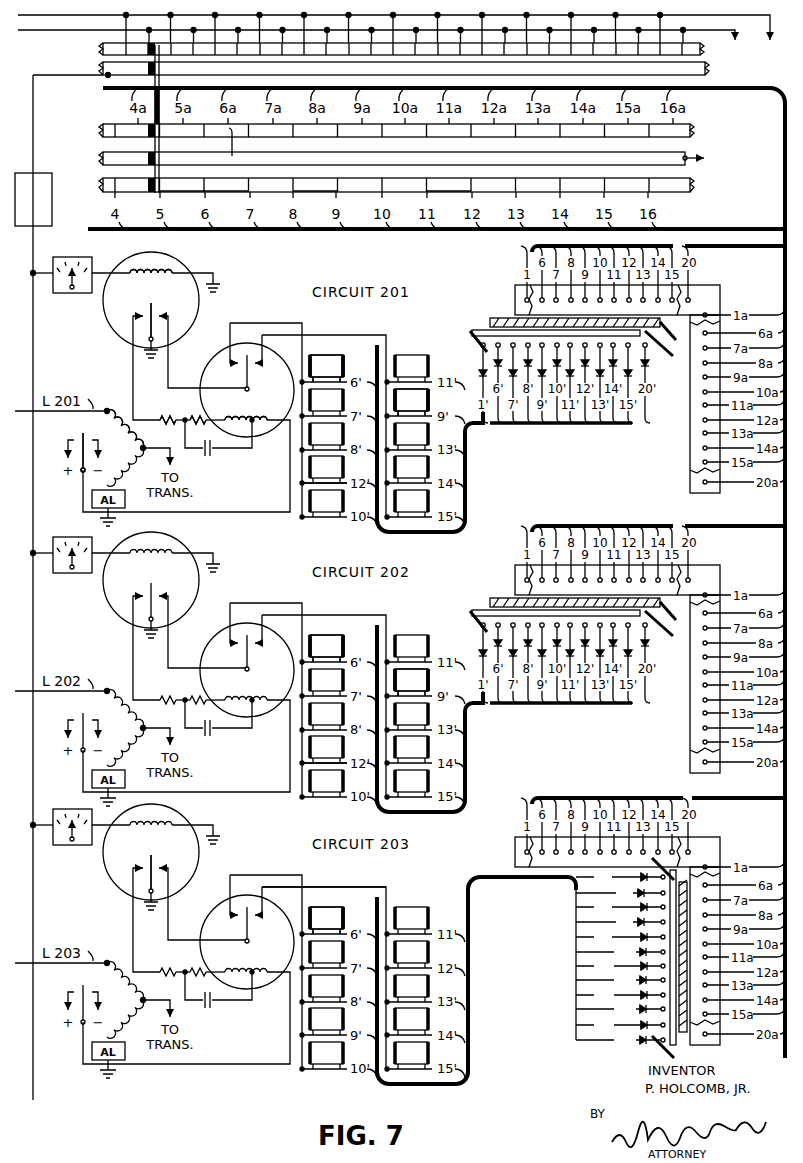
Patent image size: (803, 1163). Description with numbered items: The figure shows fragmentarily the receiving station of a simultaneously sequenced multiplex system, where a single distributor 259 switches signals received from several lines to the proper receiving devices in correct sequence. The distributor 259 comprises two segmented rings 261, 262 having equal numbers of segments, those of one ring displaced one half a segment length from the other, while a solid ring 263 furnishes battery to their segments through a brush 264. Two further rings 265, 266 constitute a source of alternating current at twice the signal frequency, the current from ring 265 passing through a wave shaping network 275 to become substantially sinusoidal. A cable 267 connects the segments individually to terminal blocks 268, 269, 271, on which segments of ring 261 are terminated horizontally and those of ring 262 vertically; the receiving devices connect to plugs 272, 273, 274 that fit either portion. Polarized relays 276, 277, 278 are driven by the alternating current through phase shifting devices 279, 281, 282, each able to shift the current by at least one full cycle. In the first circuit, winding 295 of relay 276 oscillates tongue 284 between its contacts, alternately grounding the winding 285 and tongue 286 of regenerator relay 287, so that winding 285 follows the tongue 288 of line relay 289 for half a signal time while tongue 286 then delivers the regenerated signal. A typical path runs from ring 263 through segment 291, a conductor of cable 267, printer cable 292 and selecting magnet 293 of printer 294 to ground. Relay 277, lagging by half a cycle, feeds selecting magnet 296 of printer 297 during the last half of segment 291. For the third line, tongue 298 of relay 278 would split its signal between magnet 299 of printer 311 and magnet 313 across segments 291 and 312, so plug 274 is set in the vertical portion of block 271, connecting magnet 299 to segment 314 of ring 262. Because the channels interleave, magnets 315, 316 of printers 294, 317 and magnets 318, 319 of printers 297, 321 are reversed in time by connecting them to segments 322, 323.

The distributor 259 is at (738, 143).
The segmented ring 261 is at (100, 185).
The segmented ring 262 is at (100, 131).
The solid ring 263 is at (100, 158).
The brush 264 is at (160, 159).
The ring 265 is at (106, 73).
The ring 266 is at (100, 50).
The cable 267 is at (783, 228).
The terminal block 268 is at (718, 305).
The terminal block 269 is at (650, 649).
The terminal block 271 is at (650, 921).
The plug 272 is at (652, 350).
The plug 273 is at (577, 650).
The plug 274 is at (631, 961).
The wave shaping network 275 is at (45, 212).
The polarized relay 276 is at (197, 310).
The polarized relay 277 is at (156, 580).
The polarized relay 278 is at (156, 856).
The phase shifting device 279 is at (80, 294).
The phase shifting device 281 is at (67, 566).
The phase shifting device 282 is at (68, 840).
The tongue 284 is at (150, 322).
The winding 285 is at (241, 433).
The tongue 286 is at (247, 380).
The regenerator relay 287 is at (208, 400).
The tongue 288 is at (82, 471).
The line relay 289 is at (101, 430).
The segment 291 is at (198, 192).
The printer cable 292 is at (469, 461).
The selecting magnet 293 is at (333, 365).
The printer 294 is at (325, 350).
The winding 295 is at (147, 265).
The selecting magnet 296 is at (346, 641).
The printer 297 is at (323, 697).
The tongue 298 is at (111, 873).
The selecting magnet 299 is at (346, 911).
The printer 311 is at (323, 967).
The segment 312 is at (247, 192).
The selecting magnet 313 is at (319, 921).
The segment 314 is at (244, 147).
The selecting magnet 315 is at (318, 468).
The selecting magnet 316 is at (428, 402).
The printer 317 is at (414, 352).
The selecting magnet 318 is at (296, 749).
The selecting magnet 319 is at (429, 665).
The printer 321 is at (408, 703).
The segment 322 is at (478, 188).
The segment 323 is at (333, 185).